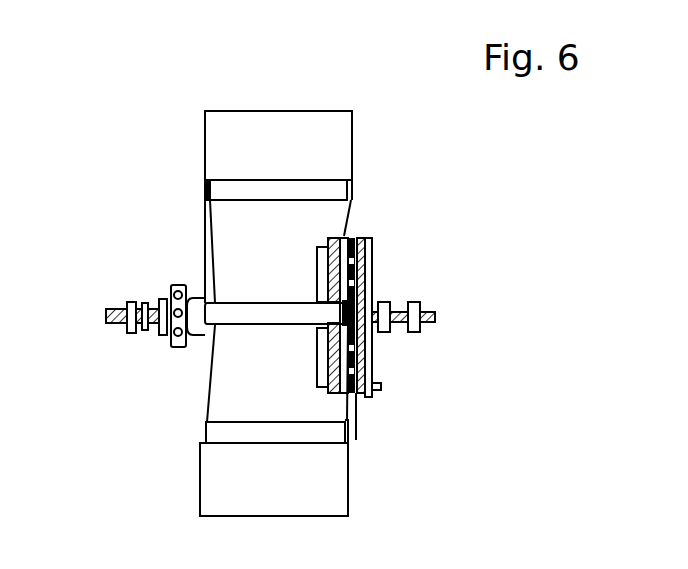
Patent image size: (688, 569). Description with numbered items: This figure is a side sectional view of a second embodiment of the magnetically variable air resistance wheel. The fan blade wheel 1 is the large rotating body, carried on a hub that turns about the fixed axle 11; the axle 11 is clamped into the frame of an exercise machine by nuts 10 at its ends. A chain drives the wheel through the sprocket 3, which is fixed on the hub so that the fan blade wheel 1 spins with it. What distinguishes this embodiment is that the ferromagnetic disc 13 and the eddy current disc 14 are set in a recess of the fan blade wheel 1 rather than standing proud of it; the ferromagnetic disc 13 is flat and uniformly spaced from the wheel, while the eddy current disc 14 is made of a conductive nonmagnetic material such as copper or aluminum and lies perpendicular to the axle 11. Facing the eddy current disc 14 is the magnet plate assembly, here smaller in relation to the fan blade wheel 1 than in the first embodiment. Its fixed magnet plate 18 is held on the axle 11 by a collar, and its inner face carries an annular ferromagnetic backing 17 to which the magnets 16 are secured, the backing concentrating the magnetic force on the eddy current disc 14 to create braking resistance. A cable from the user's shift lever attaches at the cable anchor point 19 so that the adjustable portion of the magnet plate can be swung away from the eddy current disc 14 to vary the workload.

The fan blade wheel 1 is at (217, 477).
The sprocket 3 is at (177, 347).
The nuts 10 is at (132, 333).
The axle 11 is at (115, 309).
The ferromagnetic disc 13 is at (330, 240).
The eddy current disc 14 is at (350, 238).
The magnets 16 is at (356, 440).
The annular ferromagnetic backing 17 is at (367, 238).
The fixed magnet plate 18 is at (372, 265).
The cable anchor point 19 is at (381, 388).